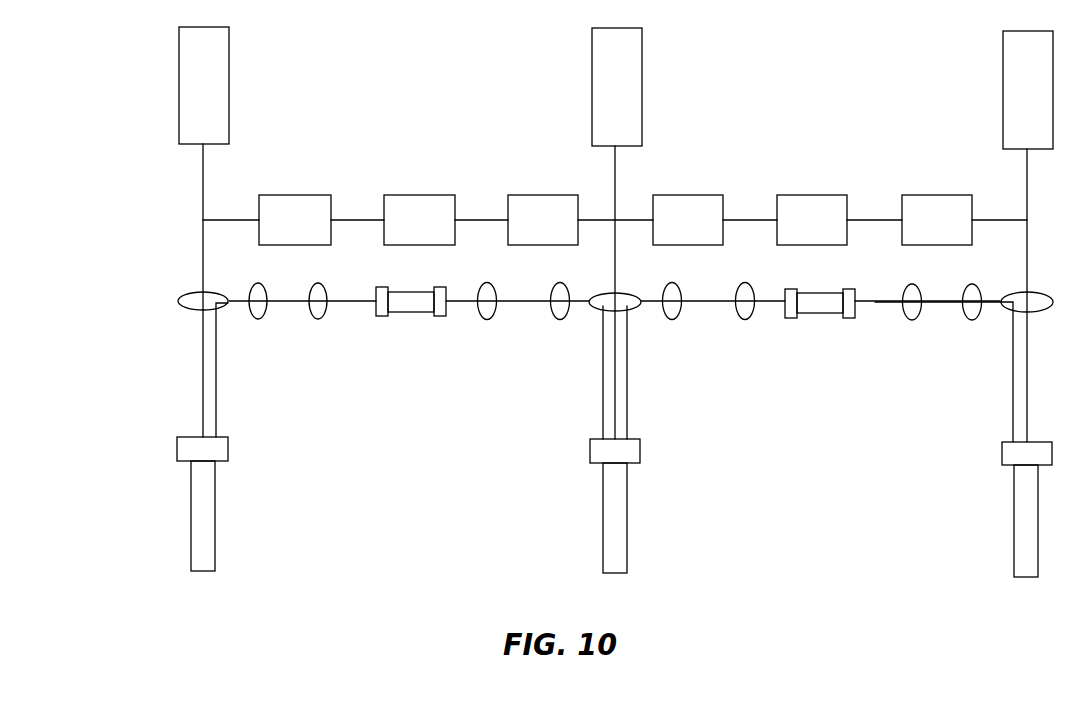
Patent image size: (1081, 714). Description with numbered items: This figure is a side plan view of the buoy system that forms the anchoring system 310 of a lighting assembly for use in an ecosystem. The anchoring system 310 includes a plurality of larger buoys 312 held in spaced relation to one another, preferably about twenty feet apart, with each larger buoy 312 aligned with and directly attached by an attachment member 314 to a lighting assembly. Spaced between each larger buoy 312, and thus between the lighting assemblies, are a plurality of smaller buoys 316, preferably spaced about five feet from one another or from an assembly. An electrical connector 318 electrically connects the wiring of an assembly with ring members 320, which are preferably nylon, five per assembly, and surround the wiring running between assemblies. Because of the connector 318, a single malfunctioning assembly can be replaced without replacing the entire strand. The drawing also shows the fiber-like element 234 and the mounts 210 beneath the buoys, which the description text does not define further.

The optical system 310 is at (127, 110).
The light source 312 is at (195, 57).
The optical component boxes 316 is at (412, 212).
The lens 320 is at (318, 283).
The beam splitter 314 is at (613, 283).
The optical element 318 is at (410, 308).
The optical fiber 234 is at (228, 306).
The probe mount 210 is at (134, 484).